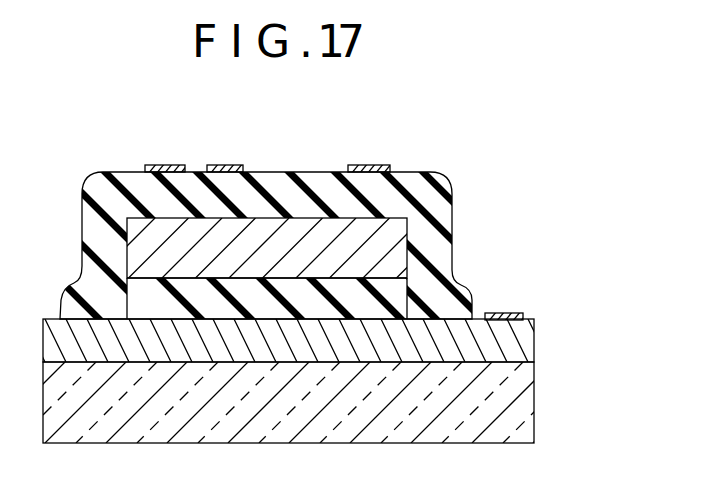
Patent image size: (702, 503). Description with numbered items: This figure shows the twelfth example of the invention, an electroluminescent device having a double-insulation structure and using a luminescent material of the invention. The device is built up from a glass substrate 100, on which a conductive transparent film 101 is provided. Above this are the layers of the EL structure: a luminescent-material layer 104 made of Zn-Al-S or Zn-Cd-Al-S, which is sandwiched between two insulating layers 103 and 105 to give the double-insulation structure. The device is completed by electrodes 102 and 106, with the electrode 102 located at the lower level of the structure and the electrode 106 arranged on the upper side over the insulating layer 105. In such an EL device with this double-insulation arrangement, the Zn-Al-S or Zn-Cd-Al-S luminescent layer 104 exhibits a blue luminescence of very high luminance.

The glass substrate 100 is at (520, 413).
The conductive transparent film 101 is at (520, 352).
The electrode 102 is at (523, 322).
The insulating layer 103 is at (392, 297).
The luminescent-material layer 104 is at (392, 243).
The insulating layer 105 is at (425, 200).
The electrode 106 is at (390, 167).